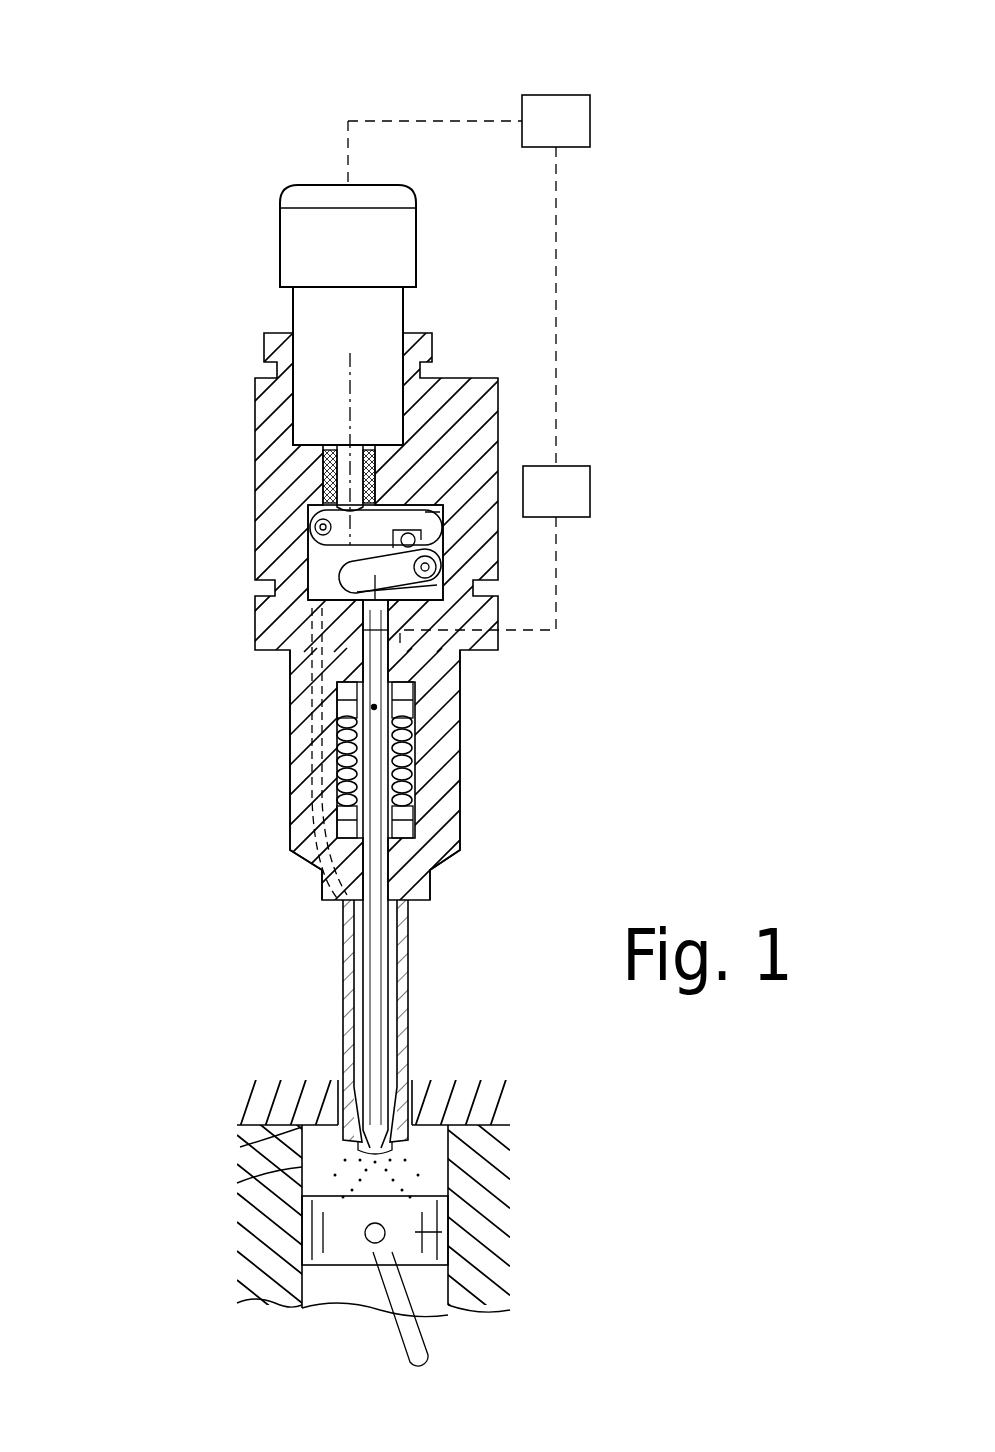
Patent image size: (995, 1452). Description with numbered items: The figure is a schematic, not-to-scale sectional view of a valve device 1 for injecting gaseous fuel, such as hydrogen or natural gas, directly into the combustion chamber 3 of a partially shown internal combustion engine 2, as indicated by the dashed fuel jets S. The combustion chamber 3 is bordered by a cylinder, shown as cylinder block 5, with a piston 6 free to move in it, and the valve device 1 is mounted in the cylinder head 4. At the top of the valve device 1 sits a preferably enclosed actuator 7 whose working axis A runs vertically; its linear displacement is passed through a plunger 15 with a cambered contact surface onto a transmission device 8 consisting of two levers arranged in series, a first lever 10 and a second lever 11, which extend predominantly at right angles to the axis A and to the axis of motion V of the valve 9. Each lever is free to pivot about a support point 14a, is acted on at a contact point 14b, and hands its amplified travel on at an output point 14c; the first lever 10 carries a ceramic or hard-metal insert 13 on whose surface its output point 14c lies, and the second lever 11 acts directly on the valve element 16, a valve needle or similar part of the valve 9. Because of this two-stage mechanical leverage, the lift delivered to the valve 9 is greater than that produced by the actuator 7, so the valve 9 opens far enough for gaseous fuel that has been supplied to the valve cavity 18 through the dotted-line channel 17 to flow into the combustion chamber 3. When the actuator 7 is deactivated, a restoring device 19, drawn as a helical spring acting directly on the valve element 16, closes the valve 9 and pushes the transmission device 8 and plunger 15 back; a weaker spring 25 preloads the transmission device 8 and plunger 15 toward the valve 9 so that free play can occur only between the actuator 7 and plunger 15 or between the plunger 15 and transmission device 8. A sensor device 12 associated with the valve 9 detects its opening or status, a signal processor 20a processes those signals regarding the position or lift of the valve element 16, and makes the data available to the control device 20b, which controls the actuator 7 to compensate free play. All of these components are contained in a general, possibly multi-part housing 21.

The valve device 1 is at (208, 190).
The internal combustion engine 2 is at (212, 1000).
The combustion chamber 3 is at (318, 1145).
The cylinder head 4 is at (480, 1102).
The cylinder block 5 is at (480, 1170).
The piston 6 is at (415, 1232).
The actuator 7 is at (313, 304).
The transmission device 8 is at (331, 555).
The valve 9 is at (357, 1042).
The first lever 10 is at (308, 503).
The second lever 11 is at (330, 600).
The sensor device 12 is at (460, 657).
The insert 13 is at (437, 552).
The support point 14a is at (315, 528).
The contact point 14b is at (441, 512).
The output point 14c is at (300, 627).
The plunger 15 is at (378, 452).
The valve element 16 is at (377, 902).
The channel 17 is at (305, 717).
The valve cavity 18 is at (400, 968).
The restoring device 19 is at (420, 755).
The signal processor 20a is at (552, 490).
The control device 20b is at (553, 127).
The housing 21 is at (463, 698).
The spring 25 is at (325, 462).
The working axis A is at (350, 375).
The fuel jets S is at (302, 1167).
The axis of motion V is at (305, 650).